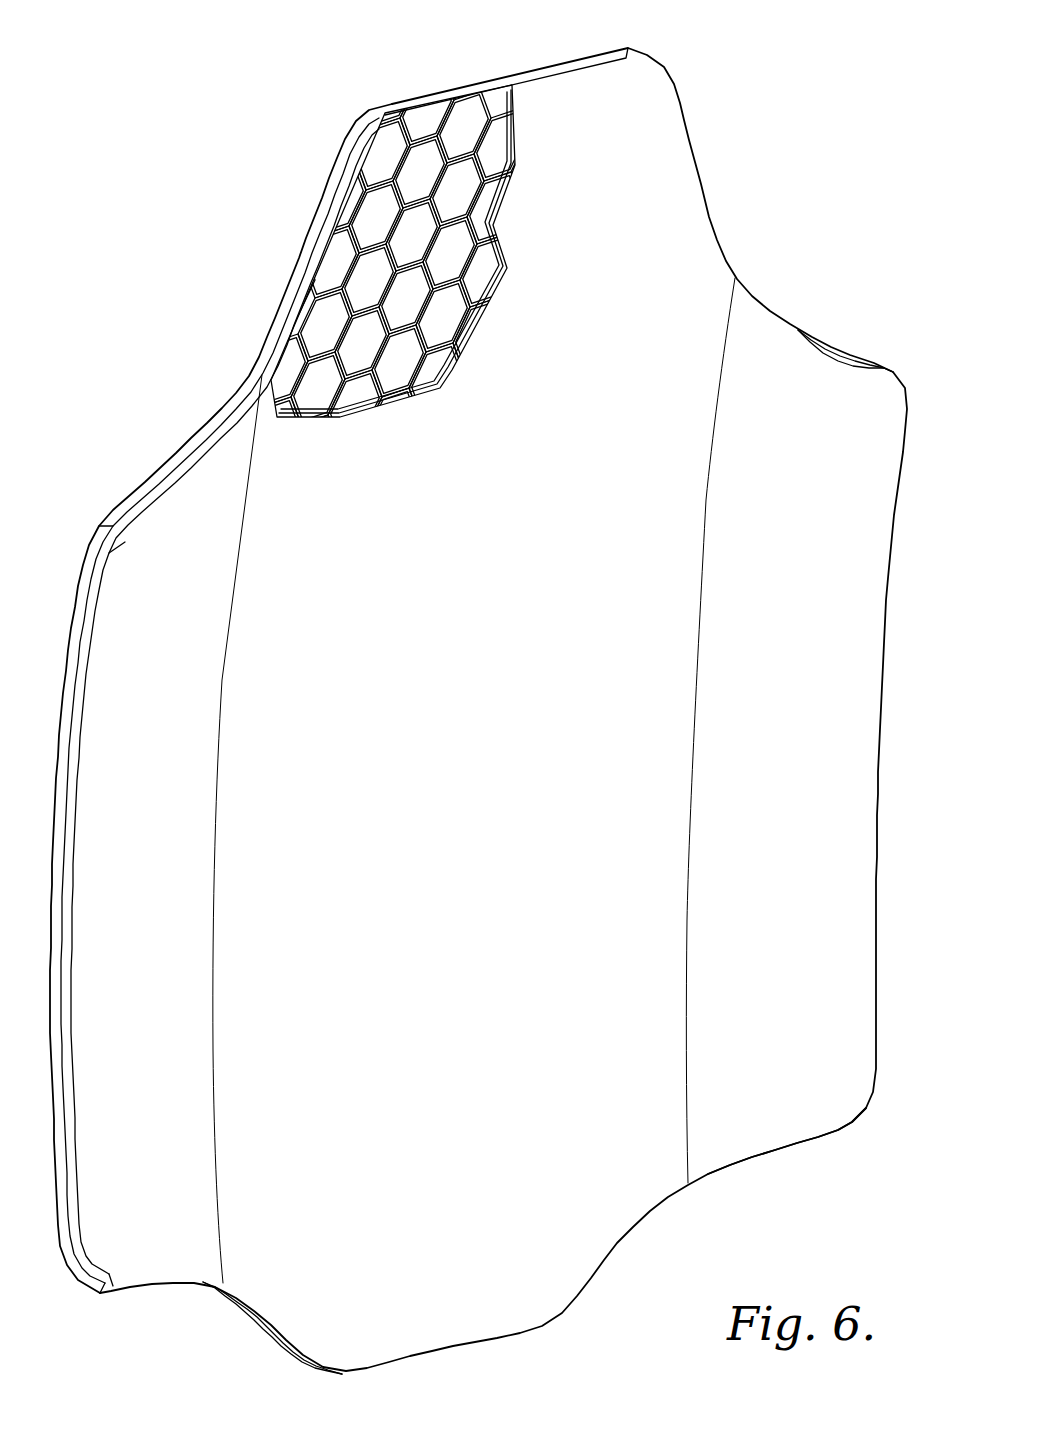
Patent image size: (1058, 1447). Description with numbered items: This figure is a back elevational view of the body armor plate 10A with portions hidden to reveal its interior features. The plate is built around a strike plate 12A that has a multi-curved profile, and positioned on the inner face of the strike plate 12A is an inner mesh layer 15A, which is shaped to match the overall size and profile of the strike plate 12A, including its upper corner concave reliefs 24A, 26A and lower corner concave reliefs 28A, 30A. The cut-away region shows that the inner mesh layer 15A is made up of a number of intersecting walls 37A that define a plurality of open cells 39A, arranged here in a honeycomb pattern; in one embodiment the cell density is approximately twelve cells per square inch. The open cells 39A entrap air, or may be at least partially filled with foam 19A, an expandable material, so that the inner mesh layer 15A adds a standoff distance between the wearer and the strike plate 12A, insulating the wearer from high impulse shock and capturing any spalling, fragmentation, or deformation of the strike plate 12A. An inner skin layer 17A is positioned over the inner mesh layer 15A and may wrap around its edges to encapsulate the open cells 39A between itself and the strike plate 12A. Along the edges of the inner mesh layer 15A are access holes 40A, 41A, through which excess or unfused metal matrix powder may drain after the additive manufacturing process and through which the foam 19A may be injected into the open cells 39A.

The body armor plate 10A is at (170, 95).
The strike plate 12A is at (275, 325).
The inner mesh layer 15A is at (417, 118).
The inner skin layer 17A is at (660, 148).
The foam 19A is at (408, 227).
The upper corner concave relief 24A is at (760, 303).
The upper corner concave relief 26A is at (187, 452).
The lower corner concave relief 28A is at (750, 1157).
The lower corner concave relief 30A is at (203, 1282).
The intersecting walls 37A is at (397, 158).
The open cells 39A is at (345, 221).
The access holes 40A is at (488, 77).
The access holes 41A is at (525, 78).